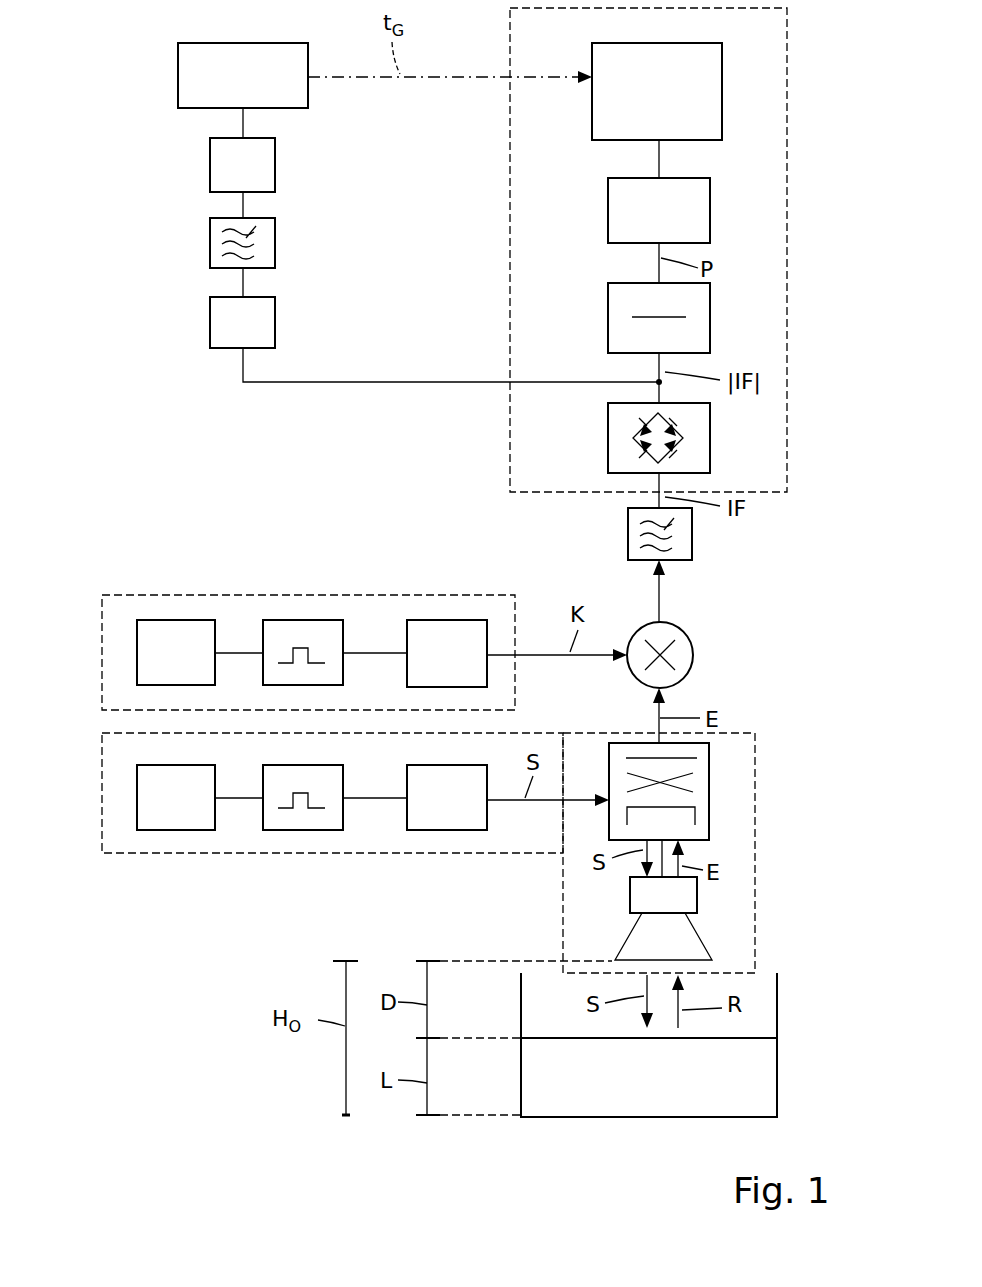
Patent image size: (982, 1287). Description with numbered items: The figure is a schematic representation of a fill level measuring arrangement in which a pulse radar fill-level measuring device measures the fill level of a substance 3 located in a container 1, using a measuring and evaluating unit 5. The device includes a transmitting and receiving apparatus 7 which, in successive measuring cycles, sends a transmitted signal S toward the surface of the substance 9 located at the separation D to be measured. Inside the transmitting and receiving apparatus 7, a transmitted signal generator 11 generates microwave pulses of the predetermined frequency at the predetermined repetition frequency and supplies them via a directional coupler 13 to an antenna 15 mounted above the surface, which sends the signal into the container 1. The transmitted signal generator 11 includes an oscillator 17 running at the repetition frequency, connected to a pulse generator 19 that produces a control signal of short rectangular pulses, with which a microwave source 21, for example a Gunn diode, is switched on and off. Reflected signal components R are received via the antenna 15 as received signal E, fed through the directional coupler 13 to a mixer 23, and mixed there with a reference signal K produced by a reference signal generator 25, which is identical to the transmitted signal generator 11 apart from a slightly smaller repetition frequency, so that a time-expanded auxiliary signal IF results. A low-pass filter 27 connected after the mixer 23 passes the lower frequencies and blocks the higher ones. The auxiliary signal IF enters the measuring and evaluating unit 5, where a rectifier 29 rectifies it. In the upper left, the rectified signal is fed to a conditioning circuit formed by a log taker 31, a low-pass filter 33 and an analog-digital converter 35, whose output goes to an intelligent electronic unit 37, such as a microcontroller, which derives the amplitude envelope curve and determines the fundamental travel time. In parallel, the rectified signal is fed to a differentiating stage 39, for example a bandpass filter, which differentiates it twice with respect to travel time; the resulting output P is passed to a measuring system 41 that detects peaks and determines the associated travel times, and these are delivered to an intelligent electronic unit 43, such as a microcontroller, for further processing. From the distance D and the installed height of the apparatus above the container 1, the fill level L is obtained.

The container 1 is at (778, 1010).
The substance 3 is at (645, 1097).
The measuring and evaluating unit 5 is at (498, 267).
The transmitting and receiving apparatus 7 is at (757, 832).
The surface of the substance 9 is at (730, 1040).
The transmitted signal generator 11 is at (102, 796).
The directional coupler 13 is at (700, 778).
The antenna 15 is at (688, 940).
The oscillator 17 is at (168, 630).
The pulse generator 19 is at (293, 630).
The microwave source 21 is at (430, 630).
The mixer 23 is at (695, 655).
The reference signal generator 25 is at (102, 651).
The low-pass filter 27 is at (680, 540).
The rectifier 29 is at (696, 445).
The log taker 31 is at (222, 305).
The low-pass filter 33 is at (222, 236).
The analog-digital converter 35 is at (222, 148).
The intelligent electronic unit 37 is at (190, 80).
The differentiating stage 39 is at (696, 325).
The measuring system 41 is at (645, 225).
The intelligent electronic unit 43 is at (702, 118).